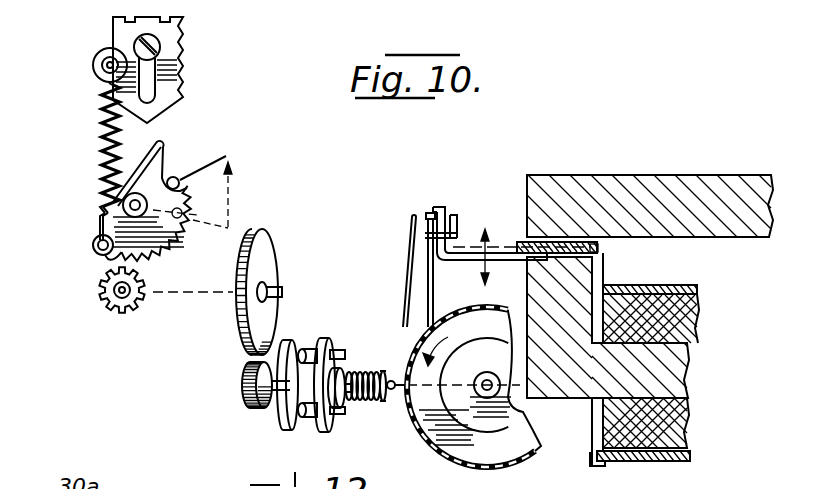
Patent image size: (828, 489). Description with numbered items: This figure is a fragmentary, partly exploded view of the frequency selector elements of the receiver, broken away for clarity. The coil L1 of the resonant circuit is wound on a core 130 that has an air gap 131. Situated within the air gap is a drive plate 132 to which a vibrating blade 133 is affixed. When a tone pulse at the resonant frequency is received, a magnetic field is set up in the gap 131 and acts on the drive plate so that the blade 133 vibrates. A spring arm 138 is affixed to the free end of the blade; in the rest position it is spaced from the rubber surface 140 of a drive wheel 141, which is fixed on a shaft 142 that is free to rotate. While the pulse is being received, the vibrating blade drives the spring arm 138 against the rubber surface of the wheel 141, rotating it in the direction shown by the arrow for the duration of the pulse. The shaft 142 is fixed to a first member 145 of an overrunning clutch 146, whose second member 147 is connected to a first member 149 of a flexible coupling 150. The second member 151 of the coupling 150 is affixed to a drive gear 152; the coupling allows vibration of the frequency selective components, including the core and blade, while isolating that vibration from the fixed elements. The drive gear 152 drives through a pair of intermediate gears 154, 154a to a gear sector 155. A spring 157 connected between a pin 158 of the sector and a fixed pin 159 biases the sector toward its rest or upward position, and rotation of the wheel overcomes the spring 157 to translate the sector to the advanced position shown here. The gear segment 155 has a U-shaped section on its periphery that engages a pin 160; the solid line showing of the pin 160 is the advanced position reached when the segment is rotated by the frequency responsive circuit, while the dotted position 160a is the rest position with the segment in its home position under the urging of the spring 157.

The core 130 is at (687, 367).
The air gap 131 is at (523, 233).
The drive plate 132 is at (600, 248).
The vibrating blade 133 is at (466, 245).
The spring arm 138 is at (413, 297).
The rubber surface 140 is at (448, 313).
The drive wheel 141 is at (467, 460).
The shaft 142 is at (391, 380).
The first member of overrunning clutch 145 is at (388, 400).
The overrunning clutch 146 is at (360, 405).
The second member of overrunning clutch 147 is at (350, 372).
The first member of flexible coupling 149 is at (320, 430).
The flexible coupling 150 is at (319, 330).
The second member of flexible coupling 151 is at (282, 418).
The drive gear 152 is at (247, 393).
The intermediate gear 154 is at (240, 327).
The intermediate gear 154a is at (117, 313).
The gear sector 155 is at (103, 263).
The spring 157 is at (100, 163).
The pin of the sector 158 is at (93, 245).
The fixed pin 159 is at (100, 62).
The pin 160 is at (175, 178).
The rest position of pin 160a is at (230, 190).
The coil L1 is at (697, 313).